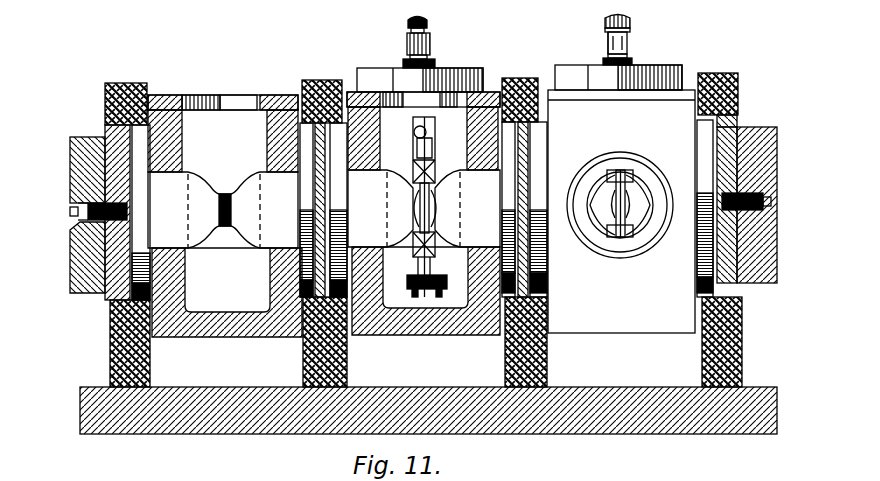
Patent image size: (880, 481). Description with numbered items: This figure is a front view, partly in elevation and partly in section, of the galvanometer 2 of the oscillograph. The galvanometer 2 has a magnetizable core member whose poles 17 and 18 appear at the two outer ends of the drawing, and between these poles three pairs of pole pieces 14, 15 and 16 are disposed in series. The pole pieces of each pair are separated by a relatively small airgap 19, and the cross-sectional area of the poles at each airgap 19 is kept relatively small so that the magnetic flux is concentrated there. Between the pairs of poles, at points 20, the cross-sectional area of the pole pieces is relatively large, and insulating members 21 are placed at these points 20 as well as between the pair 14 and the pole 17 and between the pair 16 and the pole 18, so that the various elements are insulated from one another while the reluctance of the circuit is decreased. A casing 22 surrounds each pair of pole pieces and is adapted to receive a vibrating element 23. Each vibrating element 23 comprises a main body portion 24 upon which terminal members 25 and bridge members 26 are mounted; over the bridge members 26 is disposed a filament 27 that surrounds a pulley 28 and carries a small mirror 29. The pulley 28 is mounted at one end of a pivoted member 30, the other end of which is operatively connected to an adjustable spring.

The galvanometer 2 is at (263, 74).
The pair of pole pieces 14 is at (202, 186).
The pair of pole pieces 15 is at (444, 168).
The pair of pole pieces 16 is at (633, 178).
The pole 17 is at (78, 136).
The pole 18 is at (757, 131).
The airgap 19 is at (223, 236).
The points 20 is at (293, 268).
The insulating member 21 is at (347, 338).
The casing 22 is at (210, 328).
The vibrating element 23 is at (484, 72).
The main body portion 24 is at (412, 152).
The terminal member 25 is at (432, 42).
The bridge member 26 is at (418, 178).
The filament 27 is at (430, 193).
The pulley 28 is at (422, 308).
The mirror 29 is at (430, 216).
The pivoted member 30 is at (412, 276).